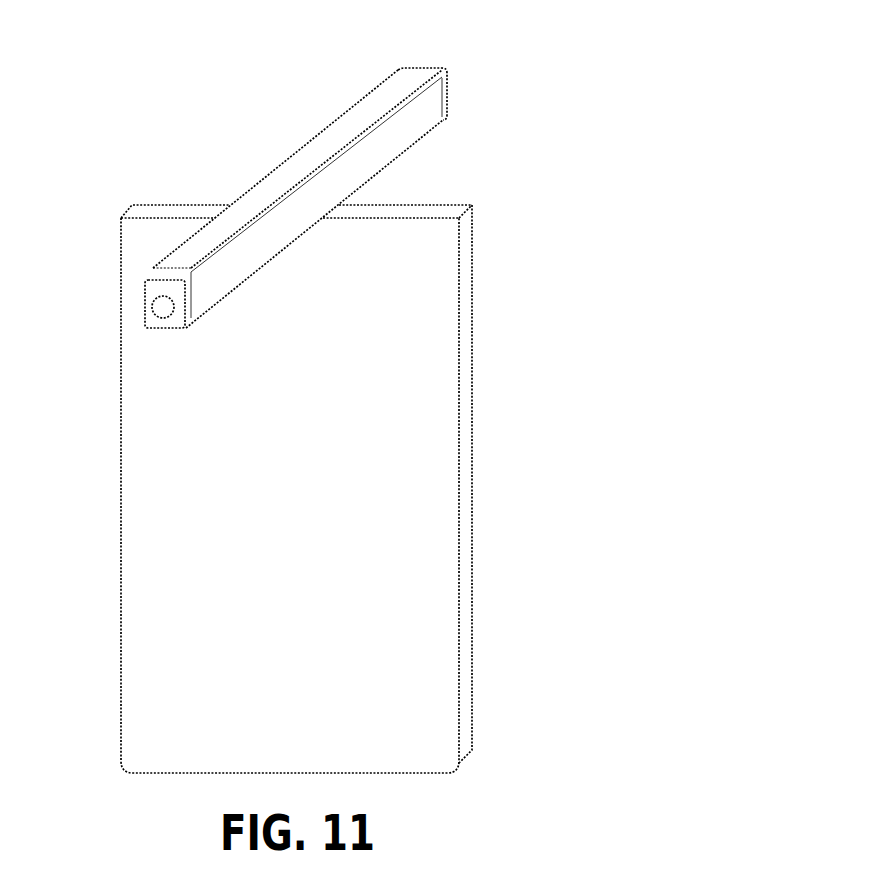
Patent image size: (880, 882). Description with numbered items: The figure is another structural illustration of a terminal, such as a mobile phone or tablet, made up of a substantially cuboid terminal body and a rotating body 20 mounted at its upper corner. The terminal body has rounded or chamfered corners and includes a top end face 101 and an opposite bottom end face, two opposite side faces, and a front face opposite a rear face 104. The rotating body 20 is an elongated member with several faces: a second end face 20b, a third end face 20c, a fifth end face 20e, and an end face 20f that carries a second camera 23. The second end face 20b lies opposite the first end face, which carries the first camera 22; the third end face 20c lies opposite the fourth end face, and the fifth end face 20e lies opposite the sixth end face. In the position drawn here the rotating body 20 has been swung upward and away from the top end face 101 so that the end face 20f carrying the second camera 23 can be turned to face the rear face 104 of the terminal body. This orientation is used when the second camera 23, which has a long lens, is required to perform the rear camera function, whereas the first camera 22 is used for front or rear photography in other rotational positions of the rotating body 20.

The rotating body 20 is at (294, 175).
The second end face 20b is at (407, 95).
The third end face 20c is at (452, 82).
The fifth end face 20e is at (338, 137).
The fourth end face 20f is at (109, 265).
The first camera 22 is at (388, 130).
The second camera 23 is at (166, 317).
The top end face 101 is at (345, 450).
The rear face 104 is at (445, 470).